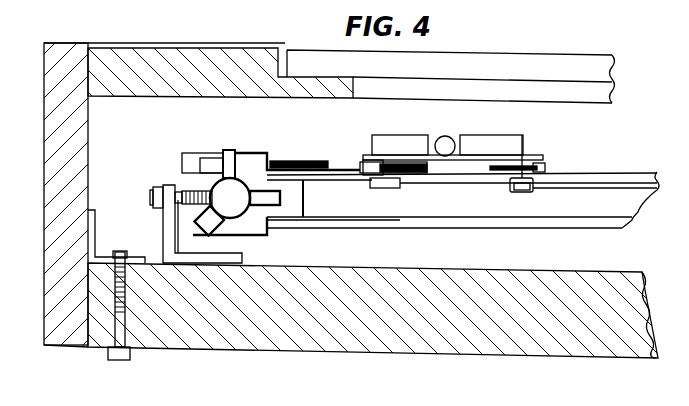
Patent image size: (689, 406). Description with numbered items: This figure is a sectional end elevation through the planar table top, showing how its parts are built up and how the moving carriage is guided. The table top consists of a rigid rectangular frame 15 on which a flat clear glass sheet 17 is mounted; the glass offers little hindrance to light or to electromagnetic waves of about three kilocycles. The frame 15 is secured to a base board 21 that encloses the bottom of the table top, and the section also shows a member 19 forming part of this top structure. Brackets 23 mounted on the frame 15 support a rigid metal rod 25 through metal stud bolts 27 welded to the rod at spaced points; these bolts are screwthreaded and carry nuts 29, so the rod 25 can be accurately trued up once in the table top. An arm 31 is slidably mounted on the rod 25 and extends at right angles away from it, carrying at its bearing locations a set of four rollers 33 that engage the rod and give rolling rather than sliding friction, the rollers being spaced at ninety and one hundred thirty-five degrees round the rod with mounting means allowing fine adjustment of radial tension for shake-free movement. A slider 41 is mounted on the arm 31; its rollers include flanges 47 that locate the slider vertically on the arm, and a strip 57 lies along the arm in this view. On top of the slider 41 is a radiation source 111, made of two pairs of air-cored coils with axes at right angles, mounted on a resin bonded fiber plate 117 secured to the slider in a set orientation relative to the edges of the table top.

The rigid rectangular frame 15 is at (68, 50).
The flat clear glass sheet 17 is at (145, 63).
The cover plate 19 is at (200, 45).
The base board 21 is at (372, 354).
The bracket 23 is at (97, 237).
The rigid metal rod 25 is at (241, 177).
The metal stud bolt 27 is at (190, 186).
The nut 29 is at (155, 184).
The arm 31 is at (622, 222).
The roller 33 is at (223, 149).
The slider 41 is at (443, 181).
The flange 47 is at (520, 196).
The strip 57 is at (313, 162).
The radiation source 111 is at (519, 146).
The resin bonded fiber plate 117 is at (546, 161).